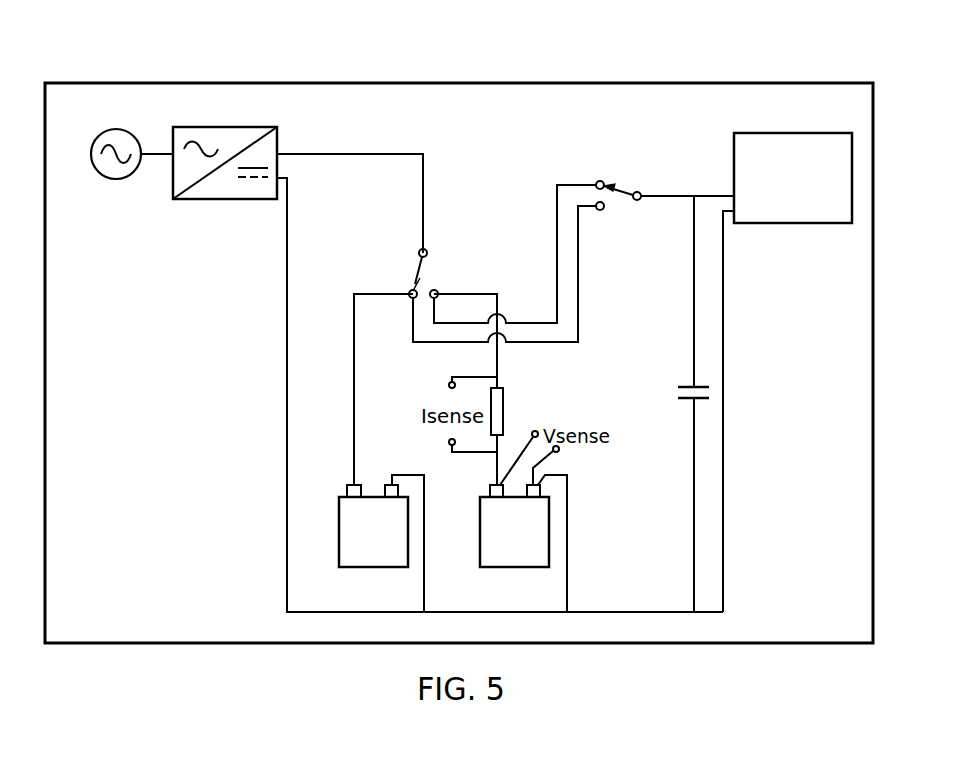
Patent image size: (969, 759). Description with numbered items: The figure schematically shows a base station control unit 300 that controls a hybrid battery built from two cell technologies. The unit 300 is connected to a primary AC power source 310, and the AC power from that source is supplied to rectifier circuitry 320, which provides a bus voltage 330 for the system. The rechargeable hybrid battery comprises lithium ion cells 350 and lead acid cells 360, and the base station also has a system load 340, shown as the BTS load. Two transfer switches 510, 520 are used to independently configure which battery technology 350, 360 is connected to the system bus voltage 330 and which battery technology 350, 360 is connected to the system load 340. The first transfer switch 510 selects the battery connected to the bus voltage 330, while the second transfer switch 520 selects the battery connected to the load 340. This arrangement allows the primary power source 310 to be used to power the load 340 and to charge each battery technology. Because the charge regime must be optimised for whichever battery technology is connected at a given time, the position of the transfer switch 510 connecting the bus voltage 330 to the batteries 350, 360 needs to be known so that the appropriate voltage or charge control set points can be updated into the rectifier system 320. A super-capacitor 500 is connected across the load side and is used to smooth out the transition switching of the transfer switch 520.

The base station control unit 300 is at (560, 84).
The primary AC power source 310 is at (118, 138).
The rectifier circuitry 320 is at (258, 132).
The bus voltage 330 is at (413, 152).
The system load 340 is at (793, 205).
The lithium ion cells 350 is at (372, 553).
The lead acid cells 360 is at (522, 553).
The super-capacitor 500 is at (686, 399).
The transfer switch 510 is at (419, 273).
The transfer switch 520 is at (625, 187).